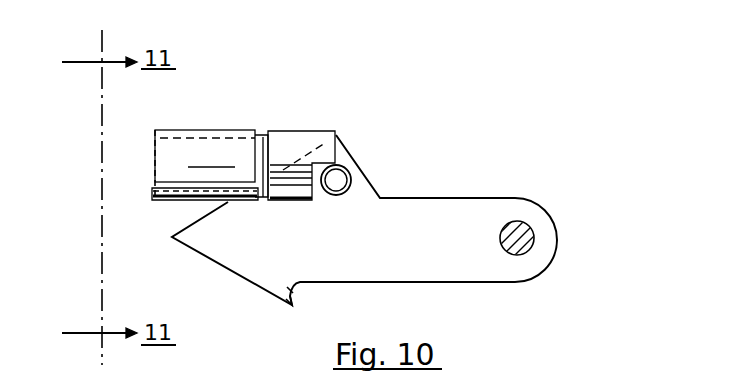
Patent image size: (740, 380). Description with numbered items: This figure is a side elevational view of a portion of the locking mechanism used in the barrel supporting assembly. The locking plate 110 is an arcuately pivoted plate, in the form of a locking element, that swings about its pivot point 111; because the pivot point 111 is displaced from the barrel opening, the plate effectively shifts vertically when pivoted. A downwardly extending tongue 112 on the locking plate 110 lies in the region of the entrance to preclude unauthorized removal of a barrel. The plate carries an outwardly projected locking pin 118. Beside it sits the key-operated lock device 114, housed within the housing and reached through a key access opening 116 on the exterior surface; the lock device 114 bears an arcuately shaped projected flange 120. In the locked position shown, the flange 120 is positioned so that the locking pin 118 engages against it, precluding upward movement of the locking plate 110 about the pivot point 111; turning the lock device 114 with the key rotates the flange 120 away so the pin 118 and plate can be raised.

The locking plate 110 is at (474, 190).
The pivot point 111 is at (532, 240).
The tongue 112 is at (297, 296).
The key-operated lock device 114 is at (203, 138).
The key access opening 116 is at (155, 138).
The locking pin 118 is at (338, 175).
The arcuately shaped projected flange 120 is at (314, 133).